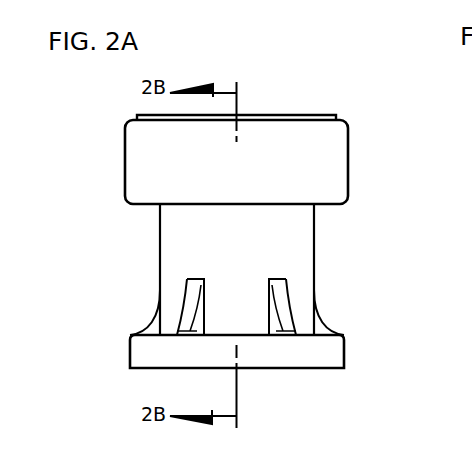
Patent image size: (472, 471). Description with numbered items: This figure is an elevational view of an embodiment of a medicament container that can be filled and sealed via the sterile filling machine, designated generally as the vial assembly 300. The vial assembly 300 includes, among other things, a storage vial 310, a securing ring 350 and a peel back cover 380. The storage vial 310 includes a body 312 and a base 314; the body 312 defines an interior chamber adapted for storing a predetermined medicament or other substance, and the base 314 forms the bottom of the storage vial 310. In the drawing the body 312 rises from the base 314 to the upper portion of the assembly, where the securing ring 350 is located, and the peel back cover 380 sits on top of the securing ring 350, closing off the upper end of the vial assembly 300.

The vial assembly 300 is at (305, 110).
The storage vial 310 is at (159, 265).
The body 312 is at (316, 221).
The base 314 is at (345, 352).
The securing ring 350 is at (154, 174).
The peel back cover 380 is at (155, 116).